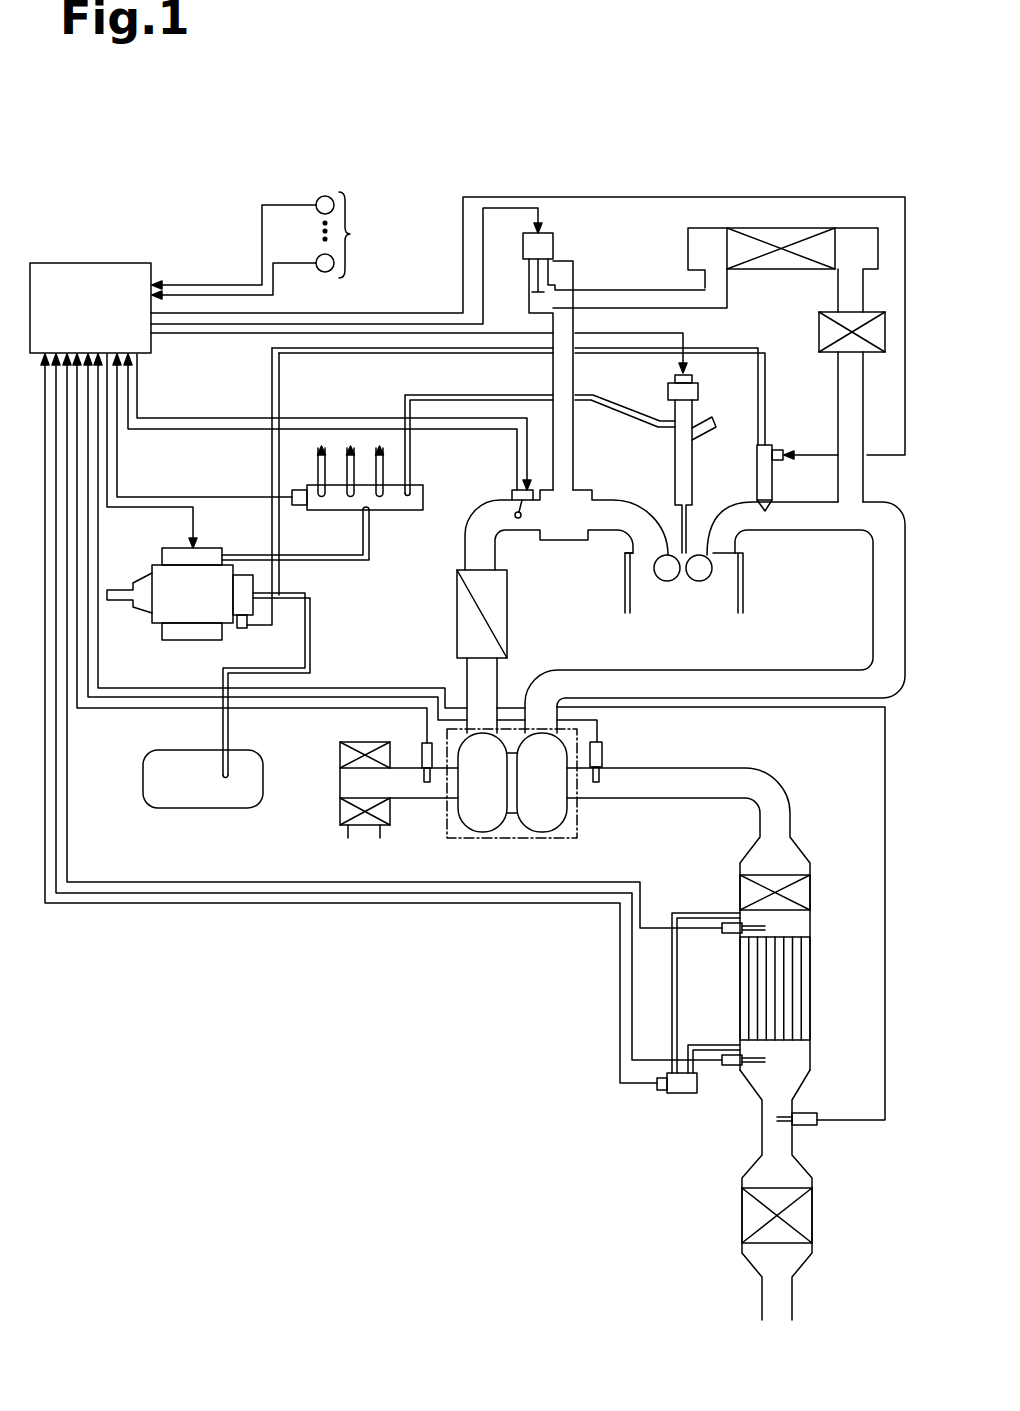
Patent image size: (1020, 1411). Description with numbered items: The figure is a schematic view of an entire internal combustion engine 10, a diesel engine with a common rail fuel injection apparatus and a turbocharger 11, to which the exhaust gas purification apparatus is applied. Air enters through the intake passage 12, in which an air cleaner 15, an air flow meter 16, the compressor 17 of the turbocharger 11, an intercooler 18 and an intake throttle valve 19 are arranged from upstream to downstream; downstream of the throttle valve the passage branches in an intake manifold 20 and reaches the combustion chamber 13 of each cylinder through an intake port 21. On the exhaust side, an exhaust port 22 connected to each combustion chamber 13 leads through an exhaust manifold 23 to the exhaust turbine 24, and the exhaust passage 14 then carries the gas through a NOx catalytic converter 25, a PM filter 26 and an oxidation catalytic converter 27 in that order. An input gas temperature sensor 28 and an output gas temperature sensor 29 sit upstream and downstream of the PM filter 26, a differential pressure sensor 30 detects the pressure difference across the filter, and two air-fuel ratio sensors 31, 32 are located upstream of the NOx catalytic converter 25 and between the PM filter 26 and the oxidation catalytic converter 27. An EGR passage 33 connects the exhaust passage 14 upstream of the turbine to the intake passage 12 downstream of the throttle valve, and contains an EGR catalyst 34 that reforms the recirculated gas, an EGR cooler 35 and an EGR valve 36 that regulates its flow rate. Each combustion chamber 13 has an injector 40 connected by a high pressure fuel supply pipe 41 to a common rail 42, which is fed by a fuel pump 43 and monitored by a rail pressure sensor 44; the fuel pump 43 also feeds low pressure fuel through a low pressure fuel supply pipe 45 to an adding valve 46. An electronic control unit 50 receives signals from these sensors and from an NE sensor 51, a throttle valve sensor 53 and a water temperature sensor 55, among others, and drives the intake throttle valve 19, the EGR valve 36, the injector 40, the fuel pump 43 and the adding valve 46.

The internal combustion engine 10 is at (614, 590).
The turbocharger 11 is at (446, 829).
The intake passage 12 is at (498, 554).
The combustion chamber 13 is at (672, 578).
The exhaust passage 14 is at (873, 616).
The air cleaner 15 is at (342, 812).
The air flow meter 16 is at (421, 756).
The compressor 17 is at (483, 828).
The intercooler 18 is at (460, 642).
The intake throttle valve 19 is at (520, 528).
The intake manifold 20 is at (608, 500).
The intake port 21 is at (619, 540).
The exhaust port 22 is at (747, 535).
The exhaust manifold 23 is at (819, 530).
The exhaust turbine 24 is at (541, 828).
The NOx catalytic converter 25 is at (811, 893).
The PM filter 26 is at (811, 985).
The oxidation catalytic converter 27 is at (811, 1219).
The input gas temperature sensor 28 is at (727, 934).
The output gas temperature sensor 29 is at (730, 1066).
The differential pressure sensor 30 is at (675, 1094).
The air-fuel ratio sensor 31 is at (603, 757).
The air-fuel ratio sensor 32 is at (808, 1127).
The EGR passage 33 is at (635, 287).
The EGR catalyst 34 is at (819, 333).
The EGR cooler 35 is at (753, 270).
The EGR valve 36 is at (555, 236).
The injector 40 is at (674, 412).
The high pressure fuel supply pipe 41 is at (437, 393).
The common rail 42 is at (394, 510).
The fuel pump 43 is at (160, 622).
The rail pressure sensor 44 is at (301, 507).
The low pressure fuel supply pipe 45 is at (340, 355).
The adding valve 46 is at (757, 462).
The electronic control unit 50 is at (125, 263).
The NE sensor 51 is at (379, 235).
The throttle valve sensor 53 is at (511, 495).
The water temperature sensor 55 is at (325, 263).